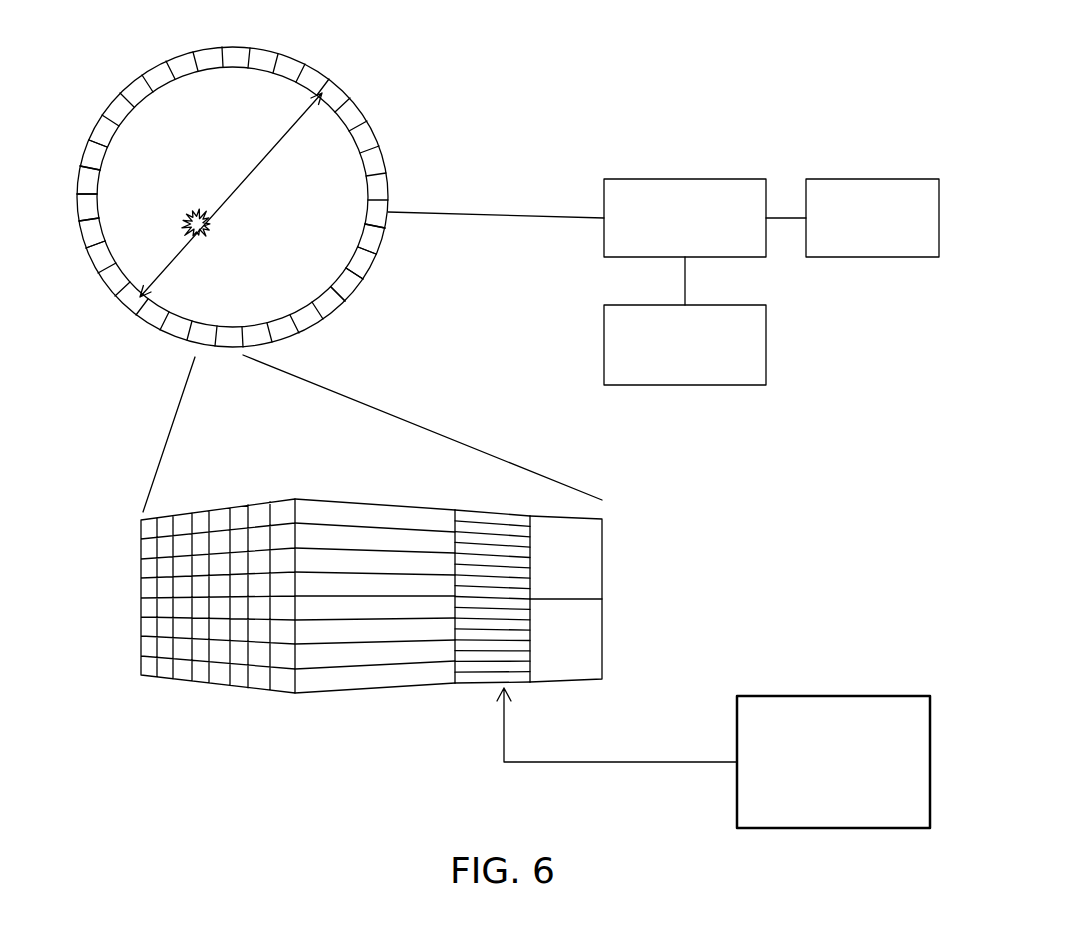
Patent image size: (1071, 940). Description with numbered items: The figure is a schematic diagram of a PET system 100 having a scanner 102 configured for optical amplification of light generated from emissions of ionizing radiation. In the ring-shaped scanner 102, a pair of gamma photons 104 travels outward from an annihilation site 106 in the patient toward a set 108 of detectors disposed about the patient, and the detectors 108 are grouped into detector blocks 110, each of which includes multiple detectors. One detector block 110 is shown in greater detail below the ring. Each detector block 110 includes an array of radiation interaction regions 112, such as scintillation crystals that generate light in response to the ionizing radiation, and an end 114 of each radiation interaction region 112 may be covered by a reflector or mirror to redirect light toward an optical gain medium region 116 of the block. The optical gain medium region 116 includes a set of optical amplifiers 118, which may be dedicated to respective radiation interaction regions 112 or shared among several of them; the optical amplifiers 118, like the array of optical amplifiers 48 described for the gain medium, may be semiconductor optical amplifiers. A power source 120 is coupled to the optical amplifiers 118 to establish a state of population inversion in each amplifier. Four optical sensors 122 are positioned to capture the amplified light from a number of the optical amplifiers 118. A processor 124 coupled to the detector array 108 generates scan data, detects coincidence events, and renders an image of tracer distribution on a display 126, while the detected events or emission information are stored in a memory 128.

The PET system 100 is at (670, 42).
The scanner 102 is at (265, 47).
The gamma photons 104 is at (268, 157).
The annihilation site 106 is at (205, 234).
The set of detectors 108 is at (88, 252).
The detector block 110 is at (382, 245).
The radiation interaction region 112 is at (353, 668).
The end of radiation interaction region 114 is at (280, 692).
The optical gain medium region 116 is at (460, 687).
The optical amplifier 118 is at (469, 510).
The power source 120 is at (800, 697).
The optical sensor 122 is at (605, 556).
The processor 124 is at (670, 179).
The display 126 is at (863, 179).
The memory 128 is at (670, 385).
The optical amplifier 48 is at (549, 516).